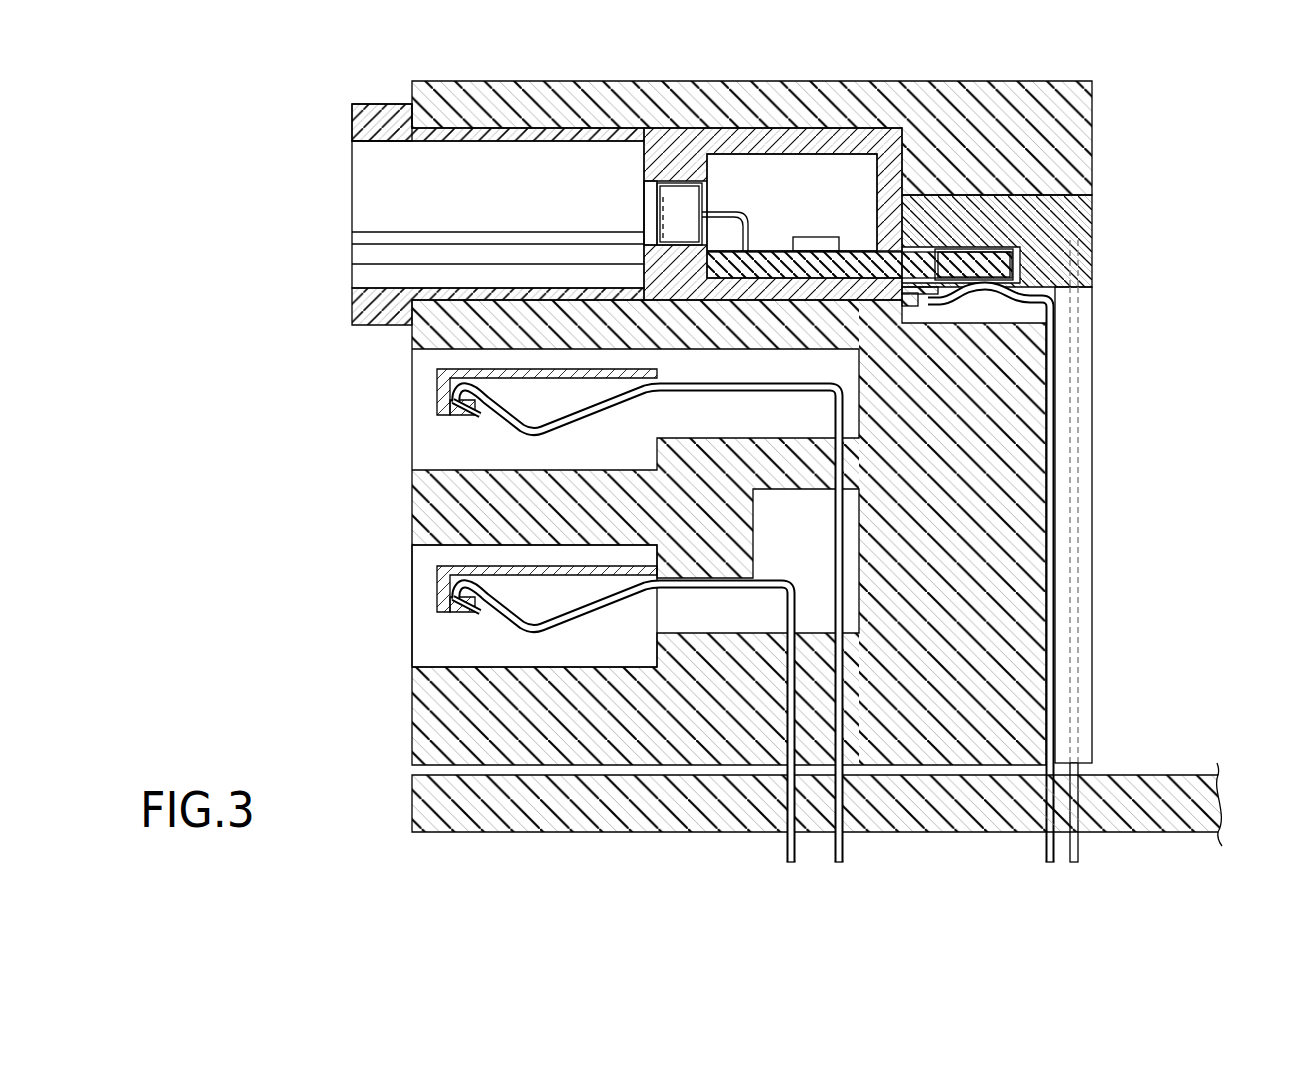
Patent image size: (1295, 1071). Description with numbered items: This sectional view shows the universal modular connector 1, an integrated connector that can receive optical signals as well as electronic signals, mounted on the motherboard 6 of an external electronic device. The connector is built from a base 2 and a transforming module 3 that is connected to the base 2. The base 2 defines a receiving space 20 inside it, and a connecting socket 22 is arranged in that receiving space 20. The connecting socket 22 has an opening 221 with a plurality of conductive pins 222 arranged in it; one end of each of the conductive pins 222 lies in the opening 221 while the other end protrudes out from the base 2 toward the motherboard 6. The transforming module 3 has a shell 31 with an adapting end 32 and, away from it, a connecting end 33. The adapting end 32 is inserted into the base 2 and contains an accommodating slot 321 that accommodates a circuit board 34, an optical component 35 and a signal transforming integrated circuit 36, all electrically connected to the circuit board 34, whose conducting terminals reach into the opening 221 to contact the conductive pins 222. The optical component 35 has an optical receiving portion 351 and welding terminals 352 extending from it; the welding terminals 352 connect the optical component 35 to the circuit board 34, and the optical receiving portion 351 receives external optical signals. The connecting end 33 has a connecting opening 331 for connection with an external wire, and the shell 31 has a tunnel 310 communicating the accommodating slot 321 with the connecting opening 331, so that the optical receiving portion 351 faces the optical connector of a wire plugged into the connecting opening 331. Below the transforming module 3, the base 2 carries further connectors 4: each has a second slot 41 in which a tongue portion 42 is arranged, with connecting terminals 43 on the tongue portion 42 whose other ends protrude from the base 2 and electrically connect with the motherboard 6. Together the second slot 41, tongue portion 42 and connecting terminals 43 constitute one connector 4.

The universal modular connector 1 is at (714, 440).
The base 2 is at (815, 471).
The receiving space 20 is at (1062, 300).
The connecting socket 22 is at (1085, 212).
The opening 221 is at (1070, 178).
The conductive pins 222 is at (1058, 553).
The transforming module 3 is at (442, 193).
The shell 31 is at (377, 122).
The adapting end 32 is at (790, 159).
The tunnel 310 is at (650, 212).
The accommodating slot 321 is at (732, 170).
The connecting end 33 is at (352, 122).
The connecting opening 331 is at (375, 174).
The circuit board 34 is at (912, 245).
The optical component 35 is at (679, 135).
The optical receiving portion 351 is at (663, 197).
The welding terminals 352 is at (815, 250).
The signal transforming integrated circuit 36 is at (857, 262).
The connector 4 is at (588, 624).
The second slot 41 is at (430, 637).
The tongue portion 42 is at (437, 578).
The connecting terminals 43 is at (518, 625).
The motherboard 6 is at (1168, 778).